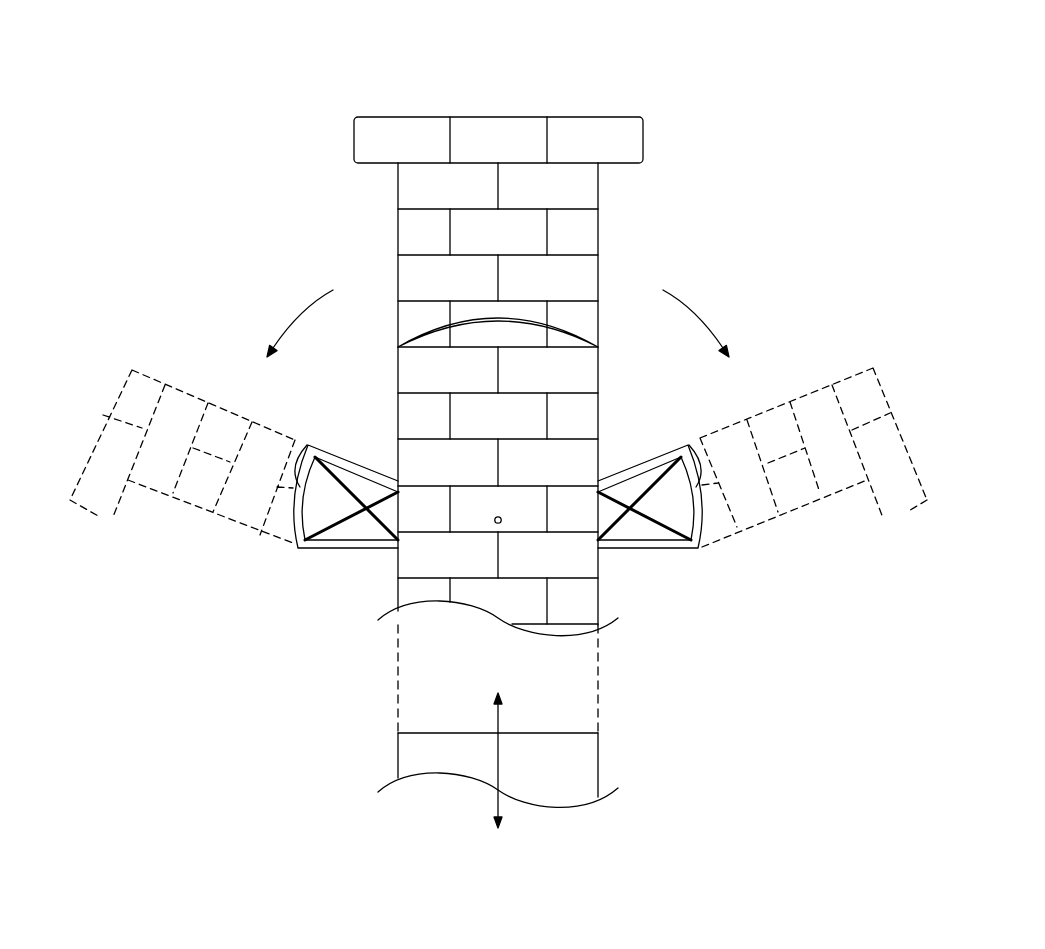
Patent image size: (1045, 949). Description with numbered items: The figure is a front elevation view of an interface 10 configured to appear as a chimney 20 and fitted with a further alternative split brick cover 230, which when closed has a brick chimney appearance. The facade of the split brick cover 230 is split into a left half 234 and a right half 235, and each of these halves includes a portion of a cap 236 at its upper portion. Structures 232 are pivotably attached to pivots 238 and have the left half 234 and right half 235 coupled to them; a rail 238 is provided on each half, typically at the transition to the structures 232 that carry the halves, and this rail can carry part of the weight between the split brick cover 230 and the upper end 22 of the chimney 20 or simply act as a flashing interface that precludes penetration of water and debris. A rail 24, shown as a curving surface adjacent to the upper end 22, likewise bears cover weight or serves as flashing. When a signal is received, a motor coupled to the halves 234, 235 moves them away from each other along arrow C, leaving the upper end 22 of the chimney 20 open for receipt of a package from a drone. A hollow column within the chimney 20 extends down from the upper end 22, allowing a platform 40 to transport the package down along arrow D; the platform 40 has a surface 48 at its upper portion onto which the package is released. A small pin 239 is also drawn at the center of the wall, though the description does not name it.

The interface 10 is at (232, 718).
The chimney 20 is at (690, 103).
The upper end 22 is at (562, 383).
The rail 24 is at (488, 322).
The platform 40 is at (622, 755).
The surface 48 is at (417, 732).
The split brick cover 230 is at (267, 65).
The structures 232 is at (373, 540).
The left half 234 is at (398, 182).
The right half 235 is at (600, 187).
The cap 236 is at (420, 125).
The pivots 238 is at (302, 460).
The pin 239 is at (505, 512).
The arrow C is at (298, 317).
The arrow D is at (493, 805).